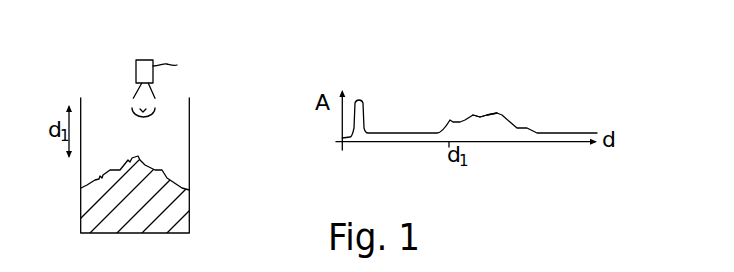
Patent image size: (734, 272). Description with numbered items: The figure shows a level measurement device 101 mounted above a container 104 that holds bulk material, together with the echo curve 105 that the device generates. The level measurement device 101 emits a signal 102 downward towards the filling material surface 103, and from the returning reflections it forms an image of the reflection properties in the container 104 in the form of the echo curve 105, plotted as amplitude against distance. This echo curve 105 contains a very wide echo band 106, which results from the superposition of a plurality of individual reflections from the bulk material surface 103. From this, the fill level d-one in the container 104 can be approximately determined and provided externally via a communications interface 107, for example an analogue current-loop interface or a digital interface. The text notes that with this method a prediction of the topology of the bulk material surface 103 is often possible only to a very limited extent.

The level measurement device 101 is at (136, 68).
The signal 102 is at (146, 118).
The filling material surface 103 is at (100, 178).
The container 104 is at (189, 152).
The echo curve 105 is at (570, 131).
The echo band 106 is at (485, 114).
The communications interface 107 is at (167, 63).